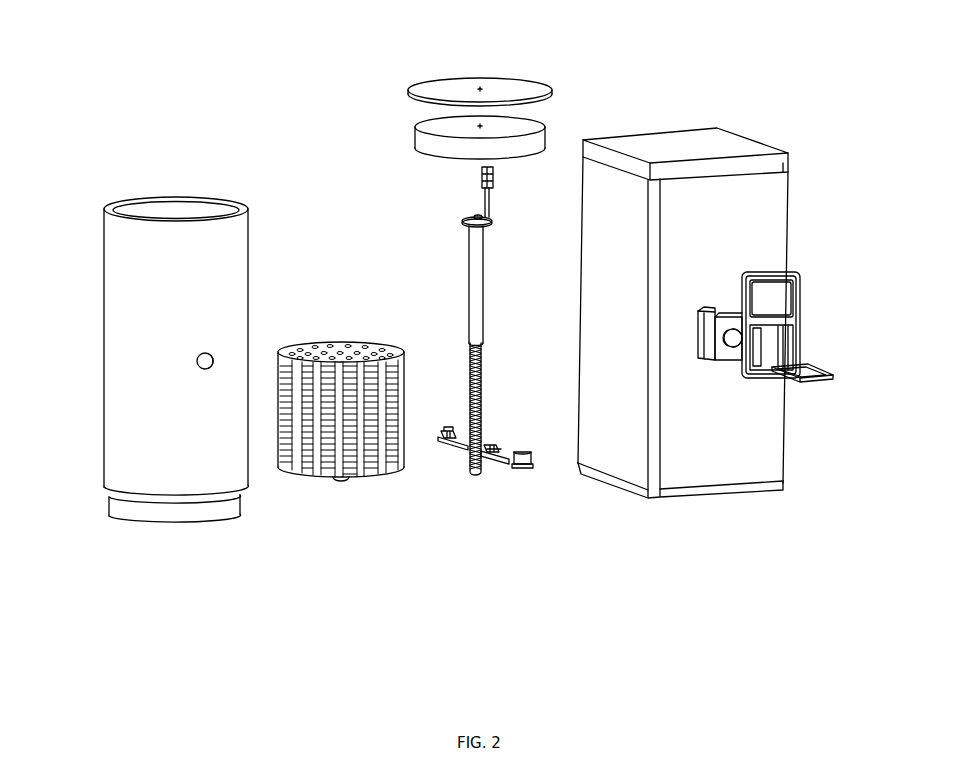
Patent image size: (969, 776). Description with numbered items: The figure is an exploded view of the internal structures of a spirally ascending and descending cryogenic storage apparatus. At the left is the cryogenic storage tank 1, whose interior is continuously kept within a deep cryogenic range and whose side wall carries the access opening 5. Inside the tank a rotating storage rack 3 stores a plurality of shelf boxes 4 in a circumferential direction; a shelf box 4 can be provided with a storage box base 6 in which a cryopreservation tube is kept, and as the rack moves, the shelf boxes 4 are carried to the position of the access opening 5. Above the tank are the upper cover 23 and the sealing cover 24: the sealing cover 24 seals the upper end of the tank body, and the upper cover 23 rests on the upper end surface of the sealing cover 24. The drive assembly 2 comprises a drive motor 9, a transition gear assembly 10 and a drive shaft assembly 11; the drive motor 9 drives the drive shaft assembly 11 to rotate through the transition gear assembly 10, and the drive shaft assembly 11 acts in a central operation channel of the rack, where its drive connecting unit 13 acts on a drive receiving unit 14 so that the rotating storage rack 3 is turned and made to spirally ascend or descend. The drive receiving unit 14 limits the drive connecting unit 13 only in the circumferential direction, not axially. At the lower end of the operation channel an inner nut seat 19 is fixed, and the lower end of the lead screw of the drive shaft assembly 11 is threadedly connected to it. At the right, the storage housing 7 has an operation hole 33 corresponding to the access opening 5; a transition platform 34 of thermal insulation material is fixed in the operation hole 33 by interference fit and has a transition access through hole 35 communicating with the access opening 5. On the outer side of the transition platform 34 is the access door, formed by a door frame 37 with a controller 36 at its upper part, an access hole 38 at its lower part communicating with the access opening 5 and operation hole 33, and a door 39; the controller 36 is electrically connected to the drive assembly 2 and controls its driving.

The cryogenic storage tank 1 is at (166, 197).
The drive assembly 2 is at (340, 215).
The rotating storage rack 3 is at (333, 341).
The shelf box 4 is at (492, 462).
The access opening 5 is at (197, 361).
The storage box base 6 is at (503, 459).
The storage housing 7 is at (705, 150).
The drive motor 9 is at (483, 172).
The transition gear assembly 10 is at (462, 220).
The drive shaft assembly 11 is at (467, 307).
The drive connecting unit 13 is at (484, 343).
The drive receiving unit 14 is at (341, 341).
The inner nut seat 19 is at (521, 450).
The upper cover 23 is at (512, 84).
The sealing cover 24 is at (545, 130).
The operation hole 33 is at (703, 353).
The transition platform 34 is at (723, 360).
The transition access through hole 35 is at (748, 377).
The controller 36 is at (783, 298).
The door frame 37 is at (786, 276).
The access hole 38 is at (773, 348).
The door 39 is at (827, 378).